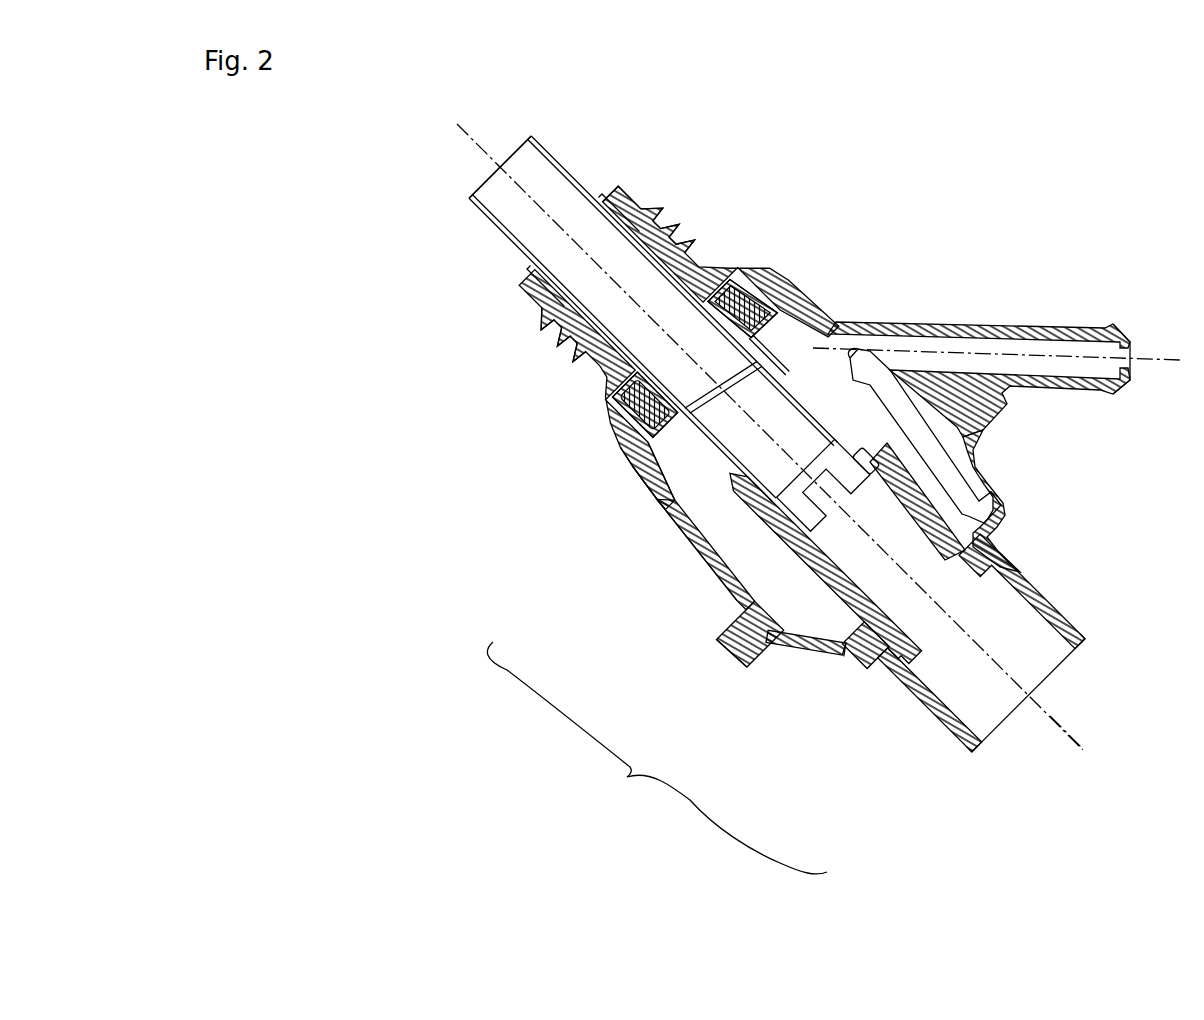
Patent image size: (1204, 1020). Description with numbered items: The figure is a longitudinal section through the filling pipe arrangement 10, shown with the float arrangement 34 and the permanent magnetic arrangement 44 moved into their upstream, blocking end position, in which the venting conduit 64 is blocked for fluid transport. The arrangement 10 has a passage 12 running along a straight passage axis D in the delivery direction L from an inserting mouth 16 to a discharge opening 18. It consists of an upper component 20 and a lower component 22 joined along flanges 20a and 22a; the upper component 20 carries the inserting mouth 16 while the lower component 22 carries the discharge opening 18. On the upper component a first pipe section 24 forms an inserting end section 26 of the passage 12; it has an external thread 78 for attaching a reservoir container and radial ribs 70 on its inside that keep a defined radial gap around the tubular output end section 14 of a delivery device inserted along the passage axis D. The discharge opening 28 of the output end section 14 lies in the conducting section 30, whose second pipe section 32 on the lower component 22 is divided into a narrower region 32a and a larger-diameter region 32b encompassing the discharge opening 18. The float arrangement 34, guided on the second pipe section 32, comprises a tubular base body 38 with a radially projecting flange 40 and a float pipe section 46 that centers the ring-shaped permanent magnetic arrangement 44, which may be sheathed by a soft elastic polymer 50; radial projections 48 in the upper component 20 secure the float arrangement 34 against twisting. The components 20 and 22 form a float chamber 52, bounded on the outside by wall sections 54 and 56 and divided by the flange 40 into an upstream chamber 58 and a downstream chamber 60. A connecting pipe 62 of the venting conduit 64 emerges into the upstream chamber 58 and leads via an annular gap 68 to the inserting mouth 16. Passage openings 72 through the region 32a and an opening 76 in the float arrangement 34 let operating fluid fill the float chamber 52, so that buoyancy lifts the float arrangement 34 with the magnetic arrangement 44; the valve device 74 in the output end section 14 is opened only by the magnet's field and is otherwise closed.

The filling pipe arrangement 10 is at (380, 406).
The passage 12 is at (1002, 706).
The output end section 14 is at (556, 158).
The inserting mouth 16 is at (608, 202).
The discharge opening 18 is at (1092, 643).
The upper component 20 is at (614, 471).
The flange 20a is at (717, 643).
The lower component 22 is at (890, 688).
The flange 22a is at (737, 660).
The first pipe section 24 is at (570, 437).
The inserting end section 26 is at (623, 363).
The discharge opening 28 is at (787, 490).
The conducting section 30 is at (657, 758).
The second pipe section 32 is at (876, 611).
The region with narrower diameter 32a is at (830, 579).
The region with larger diameter 32b is at (924, 688).
The float arrangement 34 is at (709, 503).
The tubular base body 38 is at (889, 433).
The flange 40 is at (866, 380).
The permanent magnetic arrangement 44 is at (737, 295).
The float pipe section 46 is at (668, 392).
The radial projections 48 is at (772, 297).
The soft elastic polymer 50 is at (604, 393).
The float chamber 52 is at (716, 554).
The wall section 54 is at (690, 544).
The wall section 56 is at (808, 642).
The upstream chamber 58 is at (655, 492).
The downstream chamber 60 is at (962, 476).
The connecting pipe 62 is at (1056, 328).
The venting conduit 64 is at (1122, 352).
The annular gap 68 is at (524, 271).
The radial ribs 70 is at (613, 202).
The passage openings 72 is at (836, 480).
The valve device 74 is at (712, 388).
The opening 76 is at (846, 628).
The thread 78 is at (681, 214).
The delivery direction L is at (890, 550).
The passage axis D is at (1076, 736).